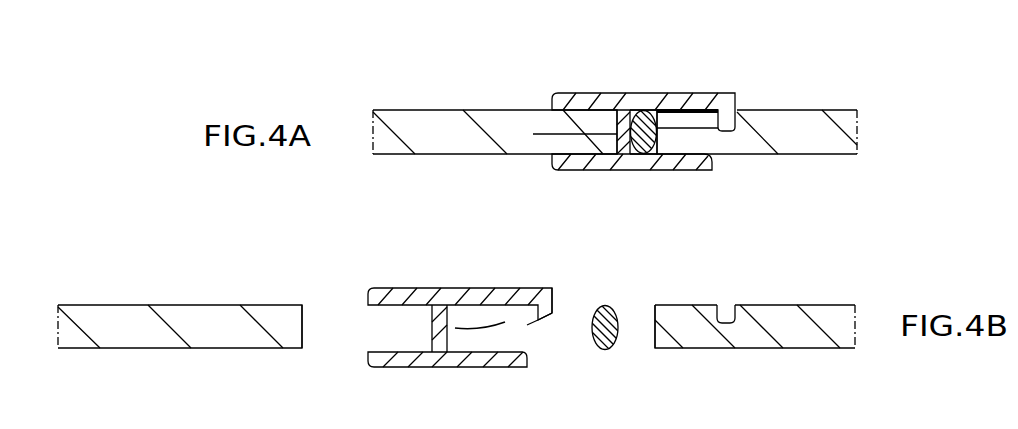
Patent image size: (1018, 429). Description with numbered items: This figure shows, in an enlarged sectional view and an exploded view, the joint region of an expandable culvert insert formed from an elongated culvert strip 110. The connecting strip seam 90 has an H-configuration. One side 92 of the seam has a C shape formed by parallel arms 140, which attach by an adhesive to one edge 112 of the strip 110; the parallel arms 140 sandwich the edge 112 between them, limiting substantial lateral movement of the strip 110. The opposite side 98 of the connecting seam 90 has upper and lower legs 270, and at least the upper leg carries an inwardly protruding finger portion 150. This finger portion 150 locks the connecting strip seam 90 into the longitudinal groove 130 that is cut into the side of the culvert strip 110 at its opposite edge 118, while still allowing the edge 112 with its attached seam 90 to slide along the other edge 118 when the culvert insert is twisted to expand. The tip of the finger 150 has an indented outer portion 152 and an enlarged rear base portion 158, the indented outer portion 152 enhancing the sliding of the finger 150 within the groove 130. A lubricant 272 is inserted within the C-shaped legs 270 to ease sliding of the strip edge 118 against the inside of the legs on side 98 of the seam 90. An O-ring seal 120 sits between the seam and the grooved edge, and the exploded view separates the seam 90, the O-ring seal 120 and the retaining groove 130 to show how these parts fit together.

In FIG. 4A, the connecting strip seam 90 is at (625, 163).
In FIG. 4B, the connecting strip seam 90 is at (383, 269).
In FIG. 4B, the one side of the connecting seam 92 is at (353, 344).
In FIG. 4B, the opposite side of the connecting seam 98 is at (507, 322).
In FIG. 4A, the culvert strip 110 is at (505, 122).
In FIG. 4B, the culvert strip 110 is at (133, 310).
In FIG. 4A, the one edge of the strip 112 is at (533, 135).
In FIG. 4B, the one edge of the strip 112 is at (302, 325).
In FIG. 4A, the opposite edge of the strip 118 is at (700, 129).
In FIG. 4B, the opposite edge of the strip 118 is at (655, 333).
In FIG. 4A, the O-ring seal 120 is at (645, 112).
In FIG. 4B, the O-ring seal 120 is at (610, 310).
In FIG. 4B, the longitudinal groove 130 is at (722, 303).
In FIG. 4A, the parallel arms 140 is at (600, 105).
In FIG. 4A, the inwardly protruding finger portion 150 is at (658, 113).
In FIG. 4B, the inwardly protruding finger portion 150 is at (564, 334).
In FIG. 4B, the indented outer portion 152 is at (562, 318).
In FIG. 4B, the enlarged rear base portion 158 is at (527, 325).
In FIG. 4A, the upper and lower legs 270 is at (728, 95).
In FIG. 4B, the upper and lower legs 270 is at (497, 305).
In FIG. 4A, the lubricant 272 is at (687, 117).